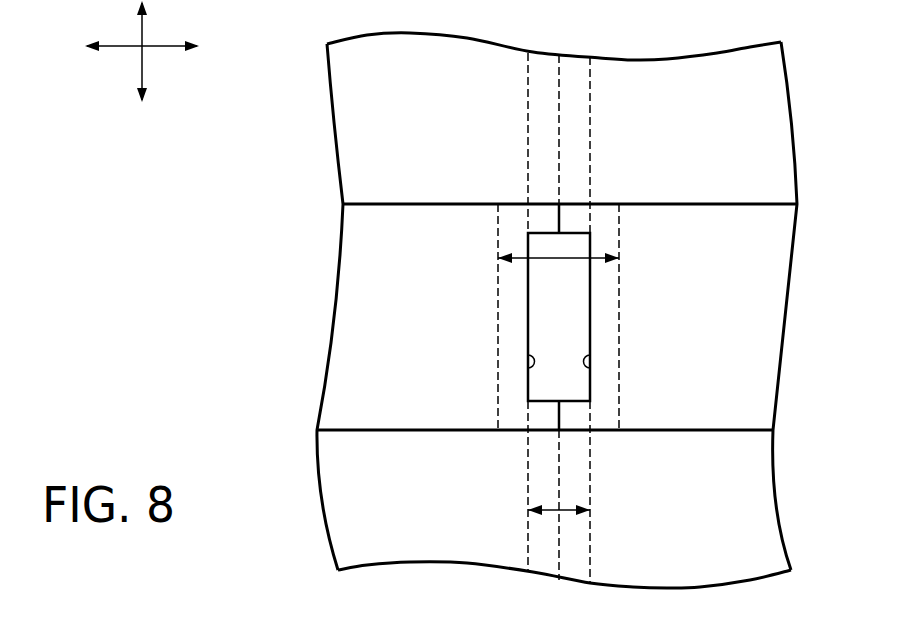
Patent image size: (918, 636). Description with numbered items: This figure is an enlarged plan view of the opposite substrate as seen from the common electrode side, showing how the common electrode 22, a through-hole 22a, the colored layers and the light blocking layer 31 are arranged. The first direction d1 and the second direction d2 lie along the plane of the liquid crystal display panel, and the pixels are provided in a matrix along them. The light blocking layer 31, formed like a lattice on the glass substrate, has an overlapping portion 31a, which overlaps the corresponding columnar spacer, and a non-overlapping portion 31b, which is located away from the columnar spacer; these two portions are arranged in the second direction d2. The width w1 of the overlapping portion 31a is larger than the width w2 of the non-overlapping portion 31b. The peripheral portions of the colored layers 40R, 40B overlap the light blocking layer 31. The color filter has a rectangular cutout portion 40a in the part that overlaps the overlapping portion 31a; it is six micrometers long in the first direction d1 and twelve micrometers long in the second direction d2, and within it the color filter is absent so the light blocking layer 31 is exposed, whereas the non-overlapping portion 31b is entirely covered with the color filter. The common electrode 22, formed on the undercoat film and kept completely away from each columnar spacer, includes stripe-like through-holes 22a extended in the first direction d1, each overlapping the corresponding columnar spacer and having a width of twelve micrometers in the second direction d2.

The common electrode 22 is at (785, 132).
The through-hole 22a is at (773, 205).
The light blocking layer 31 is at (243, 40).
The overlapping portion 31a is at (497, 288).
The non-overlapping portion 31b is at (527, 125).
The cutout portion 40a is at (526, 320).
The colored layer 40B is at (527, 369).
The colored layer 40R is at (591, 369).
The width of the overlapping portion w1 is at (567, 259).
The width of the non-overlapping portion w2 is at (565, 511).
The first direction d1 is at (115, 48).
The second direction d2 is at (143, 23).